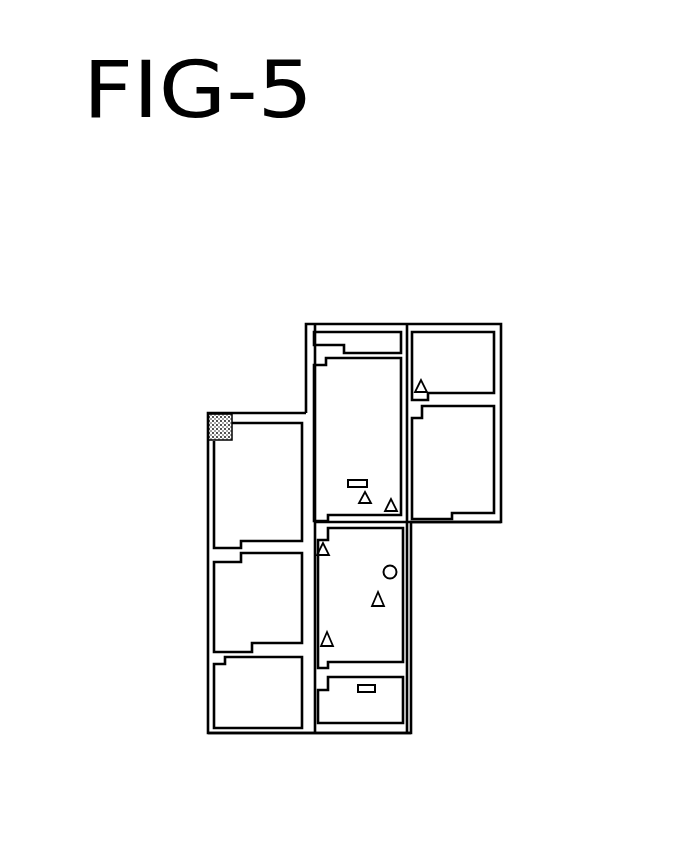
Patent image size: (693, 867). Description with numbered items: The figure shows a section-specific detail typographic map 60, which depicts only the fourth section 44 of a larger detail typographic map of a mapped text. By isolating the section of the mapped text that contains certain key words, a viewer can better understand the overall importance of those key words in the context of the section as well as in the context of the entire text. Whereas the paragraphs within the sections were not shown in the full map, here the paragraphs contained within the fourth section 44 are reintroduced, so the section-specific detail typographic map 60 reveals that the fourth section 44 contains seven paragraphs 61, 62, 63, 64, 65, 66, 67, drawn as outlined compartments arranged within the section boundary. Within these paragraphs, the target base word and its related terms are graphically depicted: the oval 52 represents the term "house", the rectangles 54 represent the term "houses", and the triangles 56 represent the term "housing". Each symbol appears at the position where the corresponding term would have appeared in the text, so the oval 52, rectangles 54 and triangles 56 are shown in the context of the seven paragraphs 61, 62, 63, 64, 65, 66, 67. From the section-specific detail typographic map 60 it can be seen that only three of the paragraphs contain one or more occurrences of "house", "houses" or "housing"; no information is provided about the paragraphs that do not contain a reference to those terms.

The section-specific detail typographic map 60 is at (587, 180).
The fourth section 44 is at (228, 402).
The paragraph 64 is at (360, 364).
The paragraph 67 is at (457, 413).
The paragraph 61 is at (258, 487).
The paragraph 62 is at (260, 597).
The paragraph 63 is at (260, 690).
The paragraph 65 is at (380, 633).
The paragraph 66 is at (353, 703).
The oval 52 is at (396, 575).
The rectangle 54 is at (368, 481).
The triangle 56 is at (330, 551).